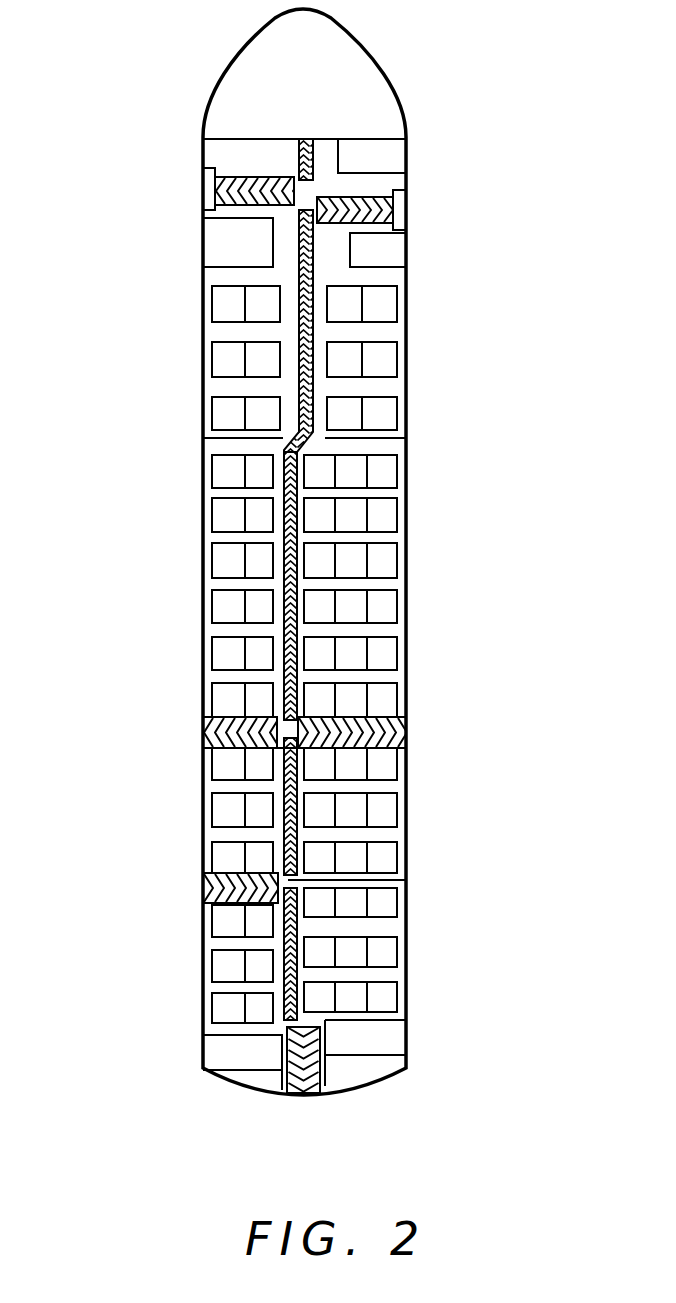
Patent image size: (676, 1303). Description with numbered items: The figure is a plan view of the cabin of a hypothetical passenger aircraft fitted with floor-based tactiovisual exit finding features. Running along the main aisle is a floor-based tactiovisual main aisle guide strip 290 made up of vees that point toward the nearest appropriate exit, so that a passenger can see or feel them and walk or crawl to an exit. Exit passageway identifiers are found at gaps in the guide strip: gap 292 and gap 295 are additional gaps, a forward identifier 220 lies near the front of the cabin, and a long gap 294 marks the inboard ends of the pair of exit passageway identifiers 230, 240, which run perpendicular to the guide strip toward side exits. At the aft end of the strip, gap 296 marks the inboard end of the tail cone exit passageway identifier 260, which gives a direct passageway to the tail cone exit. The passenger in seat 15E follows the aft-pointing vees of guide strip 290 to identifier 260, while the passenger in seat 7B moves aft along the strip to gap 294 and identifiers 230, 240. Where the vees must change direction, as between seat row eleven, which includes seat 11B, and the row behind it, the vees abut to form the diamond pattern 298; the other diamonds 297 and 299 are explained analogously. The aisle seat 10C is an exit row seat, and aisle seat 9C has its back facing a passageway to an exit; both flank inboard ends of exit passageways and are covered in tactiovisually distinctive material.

The gap 292 is at (305, 195).
The exit passageway identifier 220 is at (393, 200).
The main aisle guide strip 290 is at (307, 347).
The diamond pattern 299 is at (290, 562).
The seat 7B is at (262, 602).
The aisle seat 9C is at (320, 700).
The exit passageway identifier 230 is at (207, 738).
The exit passageway identifier 240 is at (406, 724).
The gap 294 is at (275, 730).
The aisle seat 10C is at (320, 770).
The seat 11B is at (253, 808).
The diamond pattern 298 is at (290, 808).
The gap 295 is at (330, 880).
The diamond pattern 297 is at (290, 957).
The seat 15E is at (383, 1000).
The gap 296 is at (285, 1025).
The tail cone exit passageway identifier 260 is at (312, 1092).